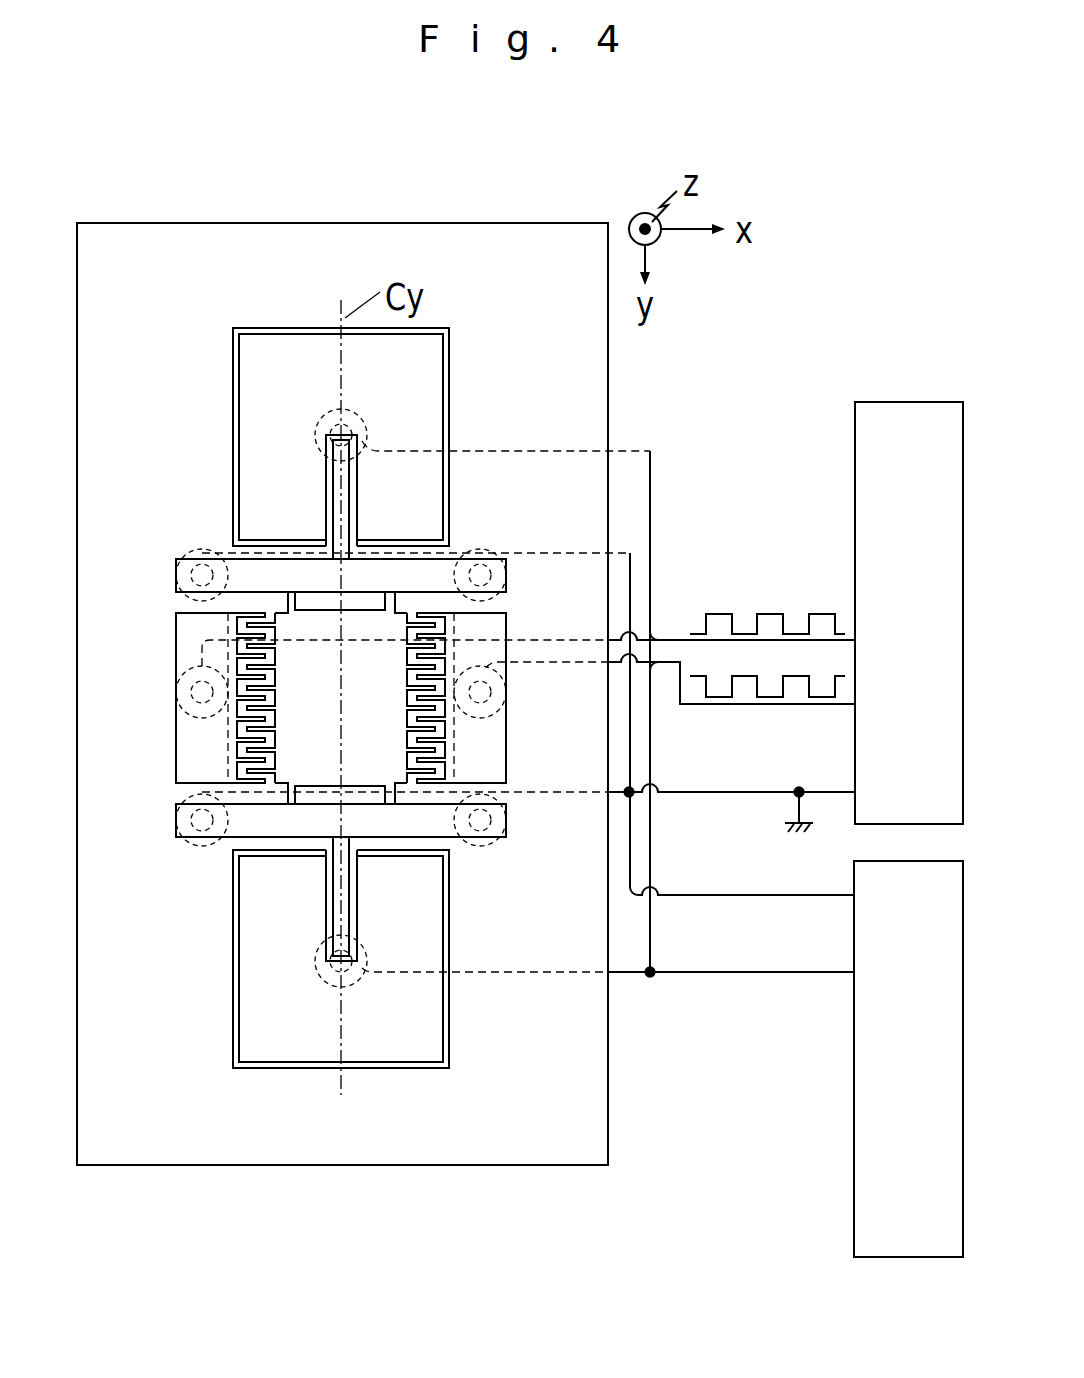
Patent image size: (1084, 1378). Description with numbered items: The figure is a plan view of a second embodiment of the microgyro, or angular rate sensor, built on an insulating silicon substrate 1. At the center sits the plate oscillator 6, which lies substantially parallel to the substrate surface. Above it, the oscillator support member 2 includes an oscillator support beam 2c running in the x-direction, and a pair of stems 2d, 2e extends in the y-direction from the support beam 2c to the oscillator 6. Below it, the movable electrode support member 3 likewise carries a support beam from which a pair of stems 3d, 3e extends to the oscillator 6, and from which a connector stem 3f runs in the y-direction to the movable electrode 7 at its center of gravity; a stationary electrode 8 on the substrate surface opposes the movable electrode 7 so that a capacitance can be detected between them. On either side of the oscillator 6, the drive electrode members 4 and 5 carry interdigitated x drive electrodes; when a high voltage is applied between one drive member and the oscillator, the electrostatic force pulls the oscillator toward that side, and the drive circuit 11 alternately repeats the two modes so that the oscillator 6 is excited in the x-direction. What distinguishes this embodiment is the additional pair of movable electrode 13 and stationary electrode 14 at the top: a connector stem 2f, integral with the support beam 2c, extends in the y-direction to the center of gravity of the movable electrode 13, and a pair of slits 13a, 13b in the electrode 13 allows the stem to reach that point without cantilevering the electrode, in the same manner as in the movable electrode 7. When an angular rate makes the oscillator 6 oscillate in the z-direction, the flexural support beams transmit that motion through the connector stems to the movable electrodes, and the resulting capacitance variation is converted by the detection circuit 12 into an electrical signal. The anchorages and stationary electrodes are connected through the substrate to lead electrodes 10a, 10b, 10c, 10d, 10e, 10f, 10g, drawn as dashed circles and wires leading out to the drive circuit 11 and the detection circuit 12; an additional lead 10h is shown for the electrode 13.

The silicon substrate 1 is at (138, 223).
The oscillator support member 2 is at (260, 559).
The oscillator support beam 2c is at (360, 582).
The stem 2d is at (297, 612).
The stem 2e is at (383, 612).
The connector stem 2f is at (350, 505).
The movable electrode support member 3 is at (242, 837).
The stem 3d is at (290, 800).
The stem 3e is at (395, 800).
The connector stem 3f is at (352, 888).
The drive electrode member 4 is at (176, 722).
The drive electrode member 5 is at (506, 670).
The plate oscillator 6 is at (332, 736).
The movable electrode 7 is at (302, 1036).
The stationary electrode 8 is at (450, 1034).
The lead electrode 10a is at (198, 550).
The lead electrode 10b is at (495, 598).
The lead electrode 10c is at (185, 678).
The lead electrode 10d is at (500, 720).
The lead electrode 10e is at (190, 796).
The lead electrode 10f is at (495, 846).
The lead electrode 10g is at (320, 962).
The anchor / terminal 10h is at (343, 415).
The drive circuit 11 is at (885, 400).
The detection circuit 12 is at (853, 1160).
The movable electrode 13 is at (293, 377).
The slit 13a is at (327, 482).
The slit 13b is at (350, 500).
The stationary electrode 14 is at (450, 379).